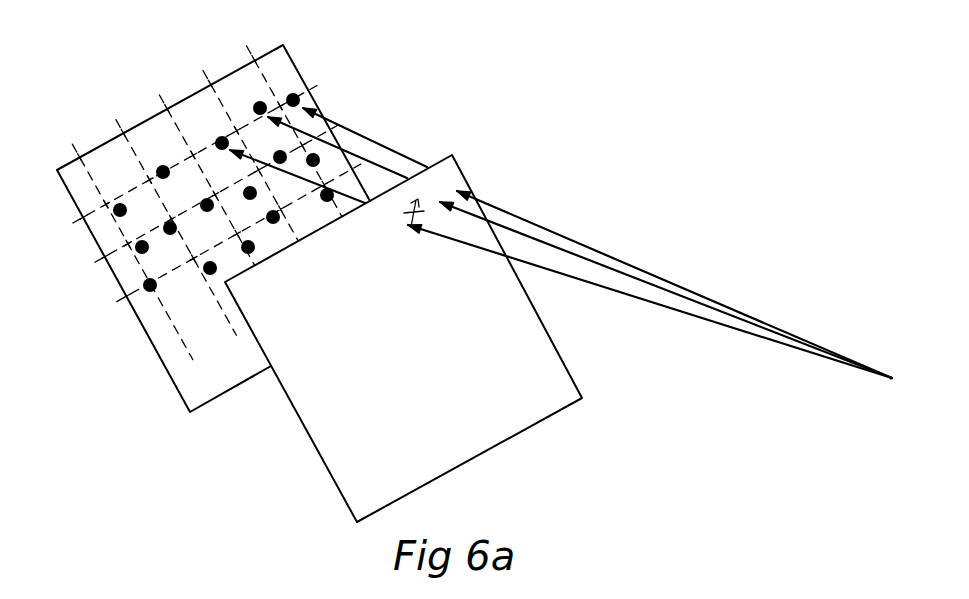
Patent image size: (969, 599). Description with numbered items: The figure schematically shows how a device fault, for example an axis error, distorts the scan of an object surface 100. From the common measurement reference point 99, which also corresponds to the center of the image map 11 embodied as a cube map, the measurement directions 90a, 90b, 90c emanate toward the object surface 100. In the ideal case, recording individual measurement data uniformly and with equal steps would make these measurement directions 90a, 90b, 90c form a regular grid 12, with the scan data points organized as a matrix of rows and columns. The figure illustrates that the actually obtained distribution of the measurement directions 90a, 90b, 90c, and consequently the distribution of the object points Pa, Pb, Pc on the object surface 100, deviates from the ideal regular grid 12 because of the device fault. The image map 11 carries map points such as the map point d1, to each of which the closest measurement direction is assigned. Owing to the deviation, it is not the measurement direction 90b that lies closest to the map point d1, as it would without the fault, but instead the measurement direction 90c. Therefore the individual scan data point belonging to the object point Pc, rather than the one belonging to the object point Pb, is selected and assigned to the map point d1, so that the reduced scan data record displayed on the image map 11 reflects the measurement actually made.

The regular grid 12 is at (172, 317).
The image map 11 is at (403, 338).
The object surface 100 is at (216, 203).
The object point Pa is at (296, 94).
The object point Pb is at (263, 101).
The object point Pc is at (222, 136).
The map point d1 is at (414, 212).
The measurement direction 90a is at (565, 237).
The measurement direction 90b is at (607, 252).
The measurement direction 90c is at (607, 295).
The measurement reference point 99 is at (880, 380).